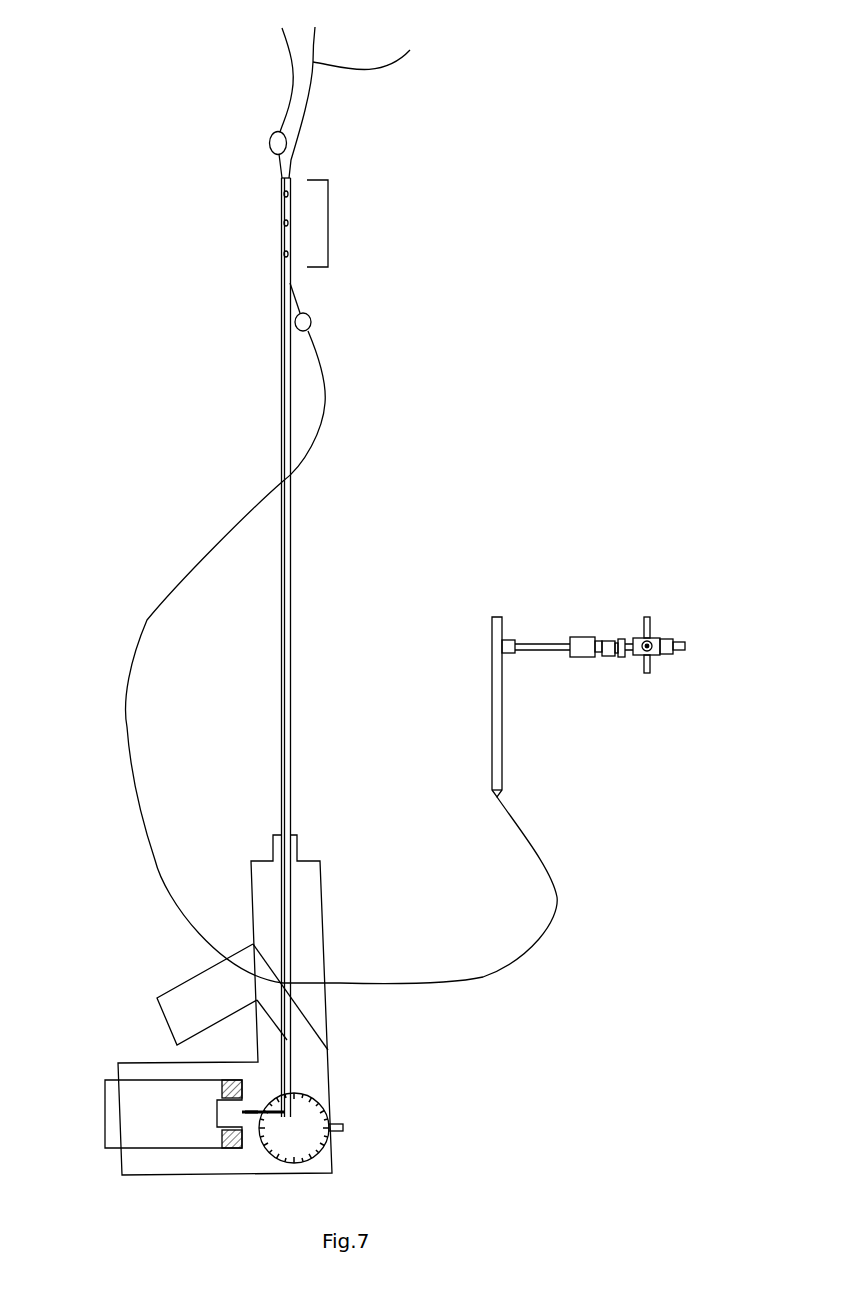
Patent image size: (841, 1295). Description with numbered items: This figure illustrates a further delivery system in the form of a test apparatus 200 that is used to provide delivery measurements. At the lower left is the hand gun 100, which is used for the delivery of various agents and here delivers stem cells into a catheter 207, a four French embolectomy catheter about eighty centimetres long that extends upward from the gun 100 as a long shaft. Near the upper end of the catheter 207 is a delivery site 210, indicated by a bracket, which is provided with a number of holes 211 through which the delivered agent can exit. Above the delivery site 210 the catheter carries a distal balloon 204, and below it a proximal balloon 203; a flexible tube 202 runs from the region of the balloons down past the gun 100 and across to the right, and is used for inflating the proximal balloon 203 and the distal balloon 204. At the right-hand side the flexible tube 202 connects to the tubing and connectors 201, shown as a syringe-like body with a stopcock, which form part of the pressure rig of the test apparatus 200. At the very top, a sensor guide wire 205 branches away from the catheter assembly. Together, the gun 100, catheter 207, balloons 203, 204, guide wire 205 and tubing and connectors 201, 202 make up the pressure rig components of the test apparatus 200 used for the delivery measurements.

The gun 100 is at (94, 996).
The test apparatus 200 is at (622, 144).
The tubing and connectors 201 is at (646, 583).
The flexible tube 202 is at (550, 925).
The proximal balloon 203 is at (312, 325).
The distal balloon 204 is at (268, 152).
The sensor guide wire 205 is at (372, 45).
The catheter 207 is at (291, 531).
The delivery site 210 is at (347, 250).
The holes 211 is at (290, 194).